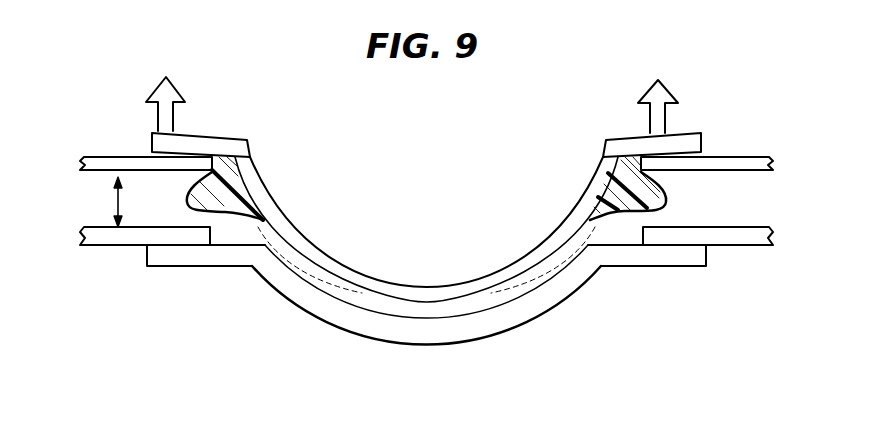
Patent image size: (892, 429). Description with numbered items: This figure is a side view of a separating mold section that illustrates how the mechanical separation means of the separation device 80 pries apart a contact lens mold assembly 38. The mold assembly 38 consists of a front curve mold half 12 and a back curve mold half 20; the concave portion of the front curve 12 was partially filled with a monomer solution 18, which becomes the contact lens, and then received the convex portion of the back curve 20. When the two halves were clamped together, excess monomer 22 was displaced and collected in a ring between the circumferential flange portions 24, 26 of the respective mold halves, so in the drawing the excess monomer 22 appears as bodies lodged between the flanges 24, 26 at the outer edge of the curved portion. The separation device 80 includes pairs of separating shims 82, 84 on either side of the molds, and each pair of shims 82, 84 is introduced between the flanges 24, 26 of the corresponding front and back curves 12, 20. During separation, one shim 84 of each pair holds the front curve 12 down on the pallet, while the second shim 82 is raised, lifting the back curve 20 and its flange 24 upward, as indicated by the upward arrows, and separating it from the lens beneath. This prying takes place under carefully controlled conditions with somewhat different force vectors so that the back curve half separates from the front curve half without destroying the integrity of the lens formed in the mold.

The front curve mold half 12 is at (582, 277).
The monomer solution 18 is at (423, 312).
The back curve mold half 20 is at (562, 229).
The excess monomer 22 is at (192, 200).
The circumferential flange portion of the front curve mold 24 is at (200, 141).
The circumferential flange portion of the back curve mold 26 is at (207, 256).
The contact lens mold assembly 38 is at (763, 202).
The separation device 80 is at (425, 156).
The separating shim (raised shim) 82 is at (105, 166).
The separating shim (holding shim) 84 is at (108, 238).